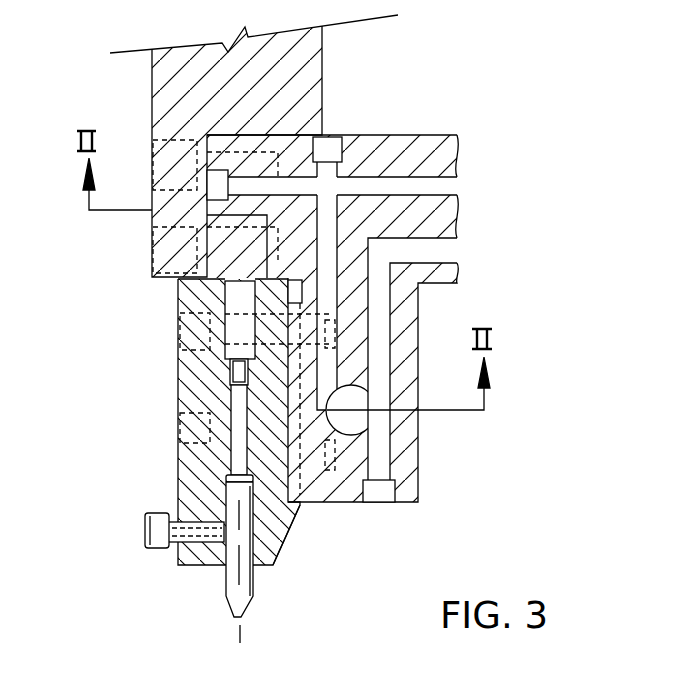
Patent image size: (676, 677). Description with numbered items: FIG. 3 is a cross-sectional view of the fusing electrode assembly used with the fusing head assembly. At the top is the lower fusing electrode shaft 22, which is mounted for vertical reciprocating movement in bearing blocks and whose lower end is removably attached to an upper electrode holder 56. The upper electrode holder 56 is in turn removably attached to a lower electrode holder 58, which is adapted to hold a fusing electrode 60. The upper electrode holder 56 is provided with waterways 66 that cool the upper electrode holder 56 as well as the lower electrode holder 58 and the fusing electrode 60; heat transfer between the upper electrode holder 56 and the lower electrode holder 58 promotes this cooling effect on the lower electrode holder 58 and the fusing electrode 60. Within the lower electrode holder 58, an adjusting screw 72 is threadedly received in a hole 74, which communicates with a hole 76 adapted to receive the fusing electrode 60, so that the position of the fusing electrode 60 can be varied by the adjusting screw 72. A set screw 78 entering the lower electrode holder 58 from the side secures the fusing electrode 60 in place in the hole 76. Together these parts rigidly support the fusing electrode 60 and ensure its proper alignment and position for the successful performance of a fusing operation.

The lower fusing electrode shaft 22 is at (310, 78).
The upper electrode holder 56 is at (455, 215).
The lower electrode holder 58 is at (180, 383).
The fusing electrode 60 is at (230, 580).
The waterways 66 is at (452, 175).
The adjusting screw 72 is at (163, 418).
The hole 74 is at (240, 368).
The hole 76 is at (282, 535).
The set screw 78 is at (147, 517).